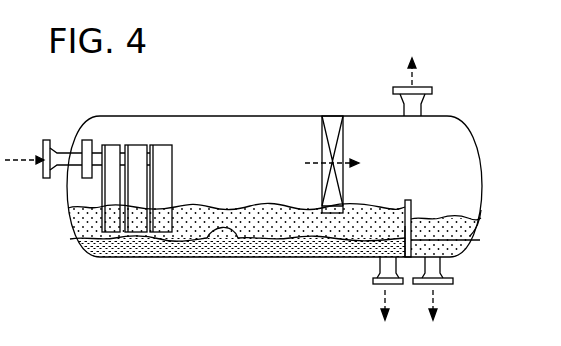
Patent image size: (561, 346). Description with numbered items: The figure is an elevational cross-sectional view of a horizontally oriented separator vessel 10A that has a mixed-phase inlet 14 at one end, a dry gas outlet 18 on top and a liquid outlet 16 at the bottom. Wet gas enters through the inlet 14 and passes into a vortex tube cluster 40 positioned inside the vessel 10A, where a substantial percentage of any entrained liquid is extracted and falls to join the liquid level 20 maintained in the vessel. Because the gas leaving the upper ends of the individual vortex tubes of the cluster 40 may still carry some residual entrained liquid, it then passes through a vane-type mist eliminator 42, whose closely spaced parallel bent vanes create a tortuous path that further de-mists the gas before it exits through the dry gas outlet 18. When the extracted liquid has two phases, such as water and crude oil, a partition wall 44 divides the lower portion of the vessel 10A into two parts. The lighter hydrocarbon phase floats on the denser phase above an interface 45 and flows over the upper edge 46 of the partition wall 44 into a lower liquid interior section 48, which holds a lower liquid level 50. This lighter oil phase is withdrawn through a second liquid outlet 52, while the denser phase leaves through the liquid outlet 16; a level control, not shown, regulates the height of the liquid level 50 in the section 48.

The horizontal separator vessel 10A is at (222, 116).
The inlet 14 is at (44, 159).
The liquid outlet 16 is at (378, 292).
The dry gas outlet 18 is at (416, 90).
The liquid level 20 is at (203, 207).
The vortex tube cluster 40 is at (192, 164).
The vane-type mist eliminator 42 is at (340, 135).
The partition wall 44 is at (405, 226).
The interface 45 is at (208, 233).
The upper edge 46 is at (409, 200).
The lower liquid interior section 48 is at (468, 238).
The lower liquid level 50 is at (440, 218).
The second liquid outlet 52 is at (442, 268).